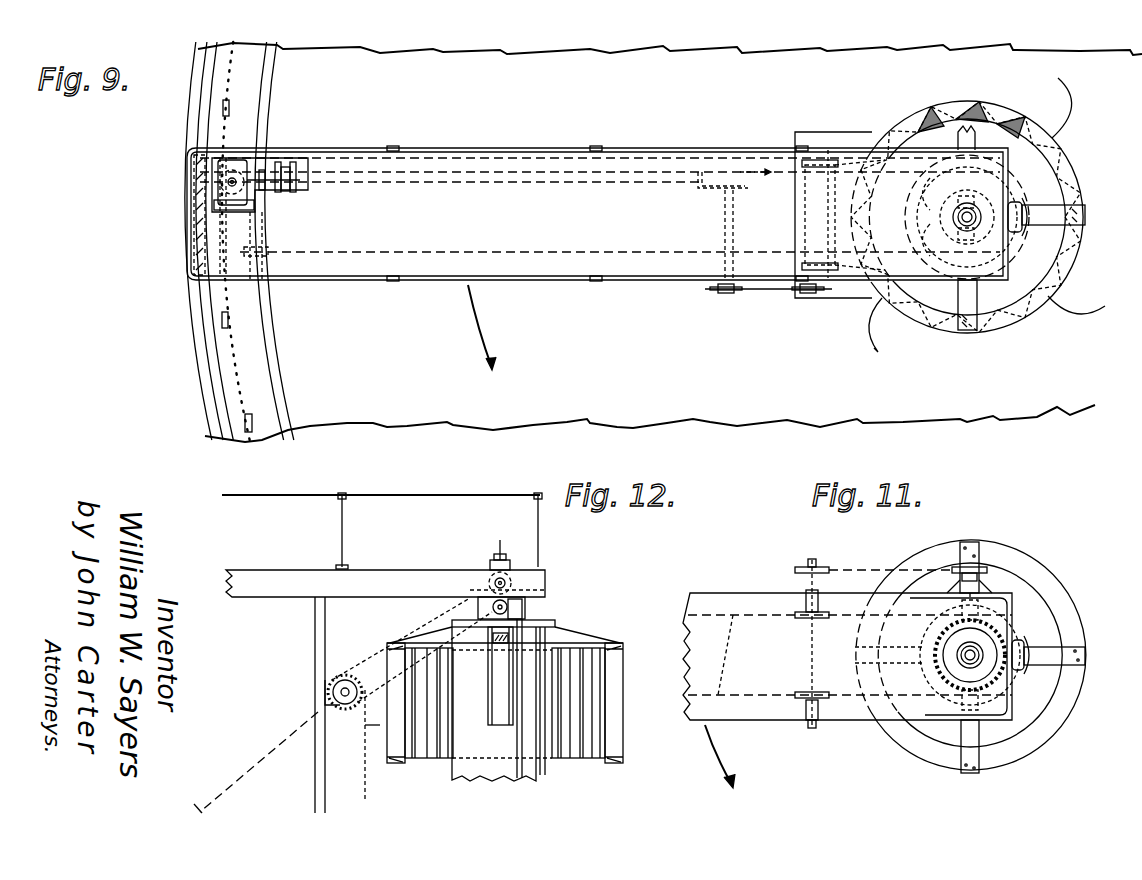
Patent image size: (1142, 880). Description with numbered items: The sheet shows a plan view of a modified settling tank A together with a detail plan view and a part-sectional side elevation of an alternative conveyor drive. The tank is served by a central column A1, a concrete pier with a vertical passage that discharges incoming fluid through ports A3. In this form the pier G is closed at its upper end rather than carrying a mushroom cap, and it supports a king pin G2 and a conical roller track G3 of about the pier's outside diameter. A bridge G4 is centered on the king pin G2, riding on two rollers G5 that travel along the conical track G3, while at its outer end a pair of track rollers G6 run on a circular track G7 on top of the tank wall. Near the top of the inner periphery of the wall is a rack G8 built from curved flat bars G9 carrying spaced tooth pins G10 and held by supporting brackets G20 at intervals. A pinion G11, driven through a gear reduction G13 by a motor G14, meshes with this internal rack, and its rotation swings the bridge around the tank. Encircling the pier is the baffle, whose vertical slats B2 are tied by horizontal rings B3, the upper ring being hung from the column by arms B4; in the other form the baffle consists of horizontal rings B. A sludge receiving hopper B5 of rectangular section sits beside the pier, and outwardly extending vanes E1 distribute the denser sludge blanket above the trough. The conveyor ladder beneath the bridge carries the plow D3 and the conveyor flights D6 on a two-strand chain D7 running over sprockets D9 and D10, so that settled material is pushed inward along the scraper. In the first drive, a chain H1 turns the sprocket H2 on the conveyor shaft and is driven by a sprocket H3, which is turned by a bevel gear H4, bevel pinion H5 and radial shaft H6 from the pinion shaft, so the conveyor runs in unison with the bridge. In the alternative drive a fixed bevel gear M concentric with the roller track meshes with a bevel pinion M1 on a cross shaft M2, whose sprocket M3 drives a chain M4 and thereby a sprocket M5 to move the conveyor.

In FIG. 9, the settling tank A is at (712, 419).
In FIG. 12, the column A1 is at (487, 772).
In FIG. 12, the discharge ports A3 is at (490, 708).
In FIG. 9, the rings B is at (970, 300).
In FIG. 9, the vertically disposed slats B2 is at (990, 108).
In FIG. 12, the vertically disposed slats B2 is at (585, 700).
In FIG. 9, the horizontal rings B3 is at (925, 116).
In FIG. 12, the horizontal rings B3 is at (620, 645).
In FIG. 11, the horizontal rings B3 is at (1082, 608).
In FIG. 9, the arms B4 is at (977, 142).
In FIG. 12, the arms B4 is at (435, 635).
In FIG. 11, the arms B4 is at (1050, 651).
In FIG. 9, the sludge receiving hopper B5 is at (821, 140).
In FIG. 9, the plow D3 is at (625, 158).
In FIG. 12, the conveyor flights D6 is at (312, 722).
In FIG. 9, the two-strand conveyor chain D7 is at (563, 252).
In FIG. 12, the two-strand conveyor chain D7 is at (363, 802).
In FIG. 11, the two-strand conveyor chain D7 is at (731, 655).
In FIG. 9, the sprocket D9 is at (272, 250).
In FIG. 9, the sprocket D10 is at (795, 250).
In FIG. 12, the sprocket D10 is at (352, 720).
In FIG. 11, the sprocket D10 is at (800, 616).
In FIG. 9, the vanes E1 is at (1060, 84).
In FIG. 9, the pier G is at (1022, 234).
In FIG. 11, the pier G is at (1024, 670).
In FIG. 9, the king pin G2 is at (970, 216).
In FIG. 12, the king pin G2 is at (499, 536).
In FIG. 9, the conical roller track G3 is at (1016, 216).
In FIG. 12, the conical roller track G3 is at (522, 616).
In FIG. 11, the conical roller track G3 is at (1022, 650).
In FIG. 9, the bridge G4 is at (523, 268).
In FIG. 12, the bridge G4 is at (284, 582).
In FIG. 11, the bridge G4 is at (736, 598).
In FIG. 9, the rollers G5 is at (918, 180).
In FIG. 12, the rollers G5 is at (508, 606).
In FIG. 11, the rollers G5 is at (942, 617).
In FIG. 9, the track rollers G6 is at (197, 180).
In FIG. 9, the circular track G7 is at (203, 303).
In FIG. 9, the rack G8 is at (245, 352).
In FIG. 9, the curved flat bars G9 is at (238, 62).
In FIG. 9, the tooth pins G10 is at (249, 390).
In FIG. 9, the pinion G11 is at (233, 172).
In FIG. 9, the gear reduction G13 is at (250, 203).
In FIG. 9, the motor G14 is at (288, 186).
In FIG. 9, the supporting brackets G20 is at (229, 105).
In FIG. 9, the chain H1 is at (768, 292).
In FIG. 9, the sprocket H2 is at (792, 293).
In FIG. 9, the sprocket H3 is at (722, 293).
In FIG. 9, the bevel gear H4 is at (748, 195).
In FIG. 9, the bevel pinion H5 is at (700, 190).
In FIG. 9, the radial shaft H6 is at (440, 182).
In FIG. 12, the fixed bevel gear M is at (510, 595).
In FIG. 11, the fixed bevel gear M is at (1002, 650).
In FIG. 12, the bevel pinion M1 is at (492, 580).
In FIG. 11, the bevel pinion M1 is at (992, 640).
In FIG. 12, the cross shaft M2 is at (508, 575).
In FIG. 11, the cross shaft M2 is at (970, 545).
In FIG. 12, the sprocket M3 is at (515, 588).
In FIG. 11, the sprocket M3 is at (987, 568).
In FIG. 12, the chain M4 is at (378, 680).
In FIG. 11, the chain M4 is at (856, 570).
In FIG. 12, the sprocket M5 is at (345, 700).
In FIG. 11, the sprocket M5 is at (810, 566).